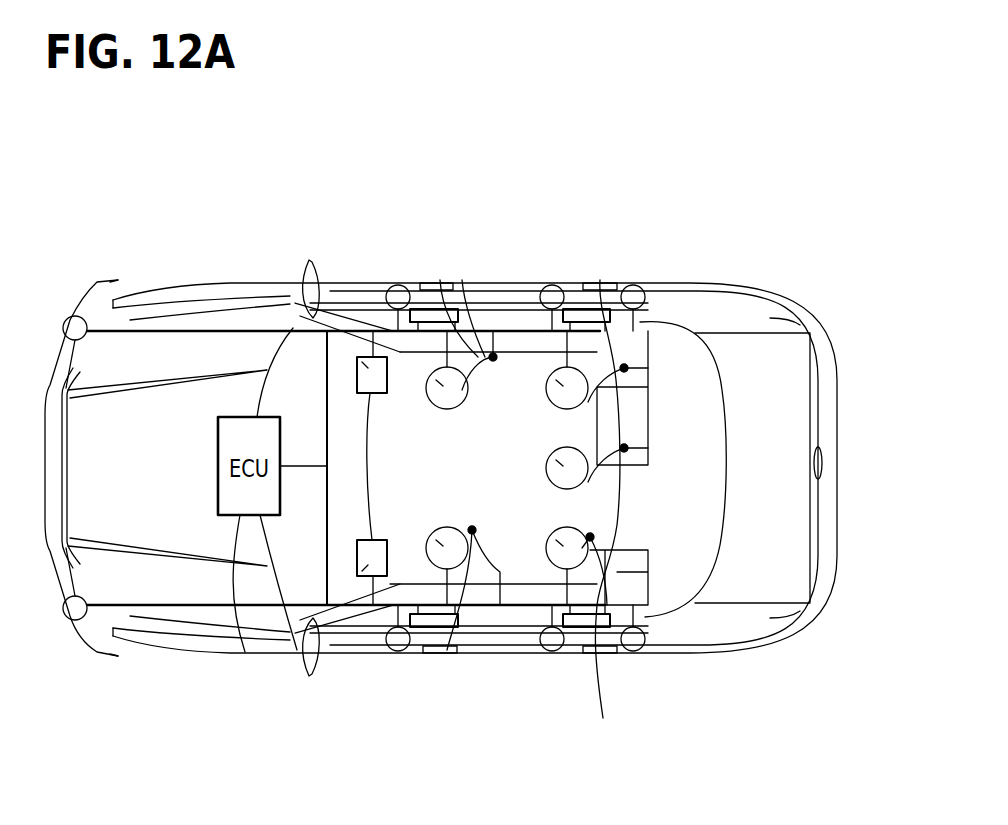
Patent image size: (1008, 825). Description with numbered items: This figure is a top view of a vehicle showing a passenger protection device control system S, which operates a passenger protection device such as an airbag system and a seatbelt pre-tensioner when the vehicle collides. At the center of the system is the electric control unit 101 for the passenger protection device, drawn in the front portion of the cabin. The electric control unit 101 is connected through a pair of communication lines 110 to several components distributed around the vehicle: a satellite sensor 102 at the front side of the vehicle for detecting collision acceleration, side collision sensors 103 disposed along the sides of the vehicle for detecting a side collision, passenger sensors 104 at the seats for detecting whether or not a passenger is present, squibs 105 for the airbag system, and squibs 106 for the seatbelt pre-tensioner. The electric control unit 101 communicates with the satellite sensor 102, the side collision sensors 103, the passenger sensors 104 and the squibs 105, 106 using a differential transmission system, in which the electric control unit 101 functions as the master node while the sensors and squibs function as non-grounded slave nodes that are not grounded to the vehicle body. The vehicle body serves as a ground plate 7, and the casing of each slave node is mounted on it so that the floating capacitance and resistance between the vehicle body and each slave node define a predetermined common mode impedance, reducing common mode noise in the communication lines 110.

The ground plate 7 is at (673, 650).
The passenger protection device control system S is at (736, 250).
The electric control unit 101 is at (247, 652).
The satellite sensor 102 is at (118, 280).
The communication lines 110 is at (220, 290).
The side collision sensor 103 is at (390, 288).
The passenger sensor 104 is at (428, 382).
The squib 105 is at (357, 358).
The squib 106 is at (493, 357).